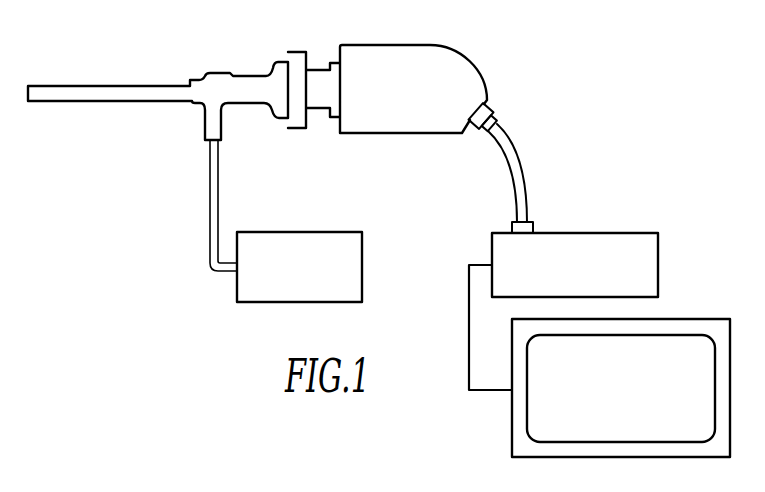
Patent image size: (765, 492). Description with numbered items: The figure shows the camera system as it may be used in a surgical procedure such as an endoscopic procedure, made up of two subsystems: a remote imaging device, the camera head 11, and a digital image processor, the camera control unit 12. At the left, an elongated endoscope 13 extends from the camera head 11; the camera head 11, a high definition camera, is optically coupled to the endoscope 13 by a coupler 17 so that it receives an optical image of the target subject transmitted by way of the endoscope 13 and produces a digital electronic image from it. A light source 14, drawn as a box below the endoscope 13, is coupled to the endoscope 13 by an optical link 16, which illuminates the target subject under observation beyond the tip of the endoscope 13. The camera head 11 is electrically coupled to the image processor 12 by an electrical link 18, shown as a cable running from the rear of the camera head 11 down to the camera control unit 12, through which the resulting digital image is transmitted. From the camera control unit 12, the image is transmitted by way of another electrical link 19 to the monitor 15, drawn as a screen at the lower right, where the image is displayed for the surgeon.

The camera head 11 is at (468, 62).
The camera control unit 12 is at (587, 274).
The endoscope 13 is at (214, 73).
The light source 14 is at (312, 278).
The monitor 15 is at (694, 319).
The optical link 16 is at (210, 180).
The coupler 17 is at (293, 52).
The electrical link 18 is at (517, 163).
The electrical link 19 is at (469, 318).